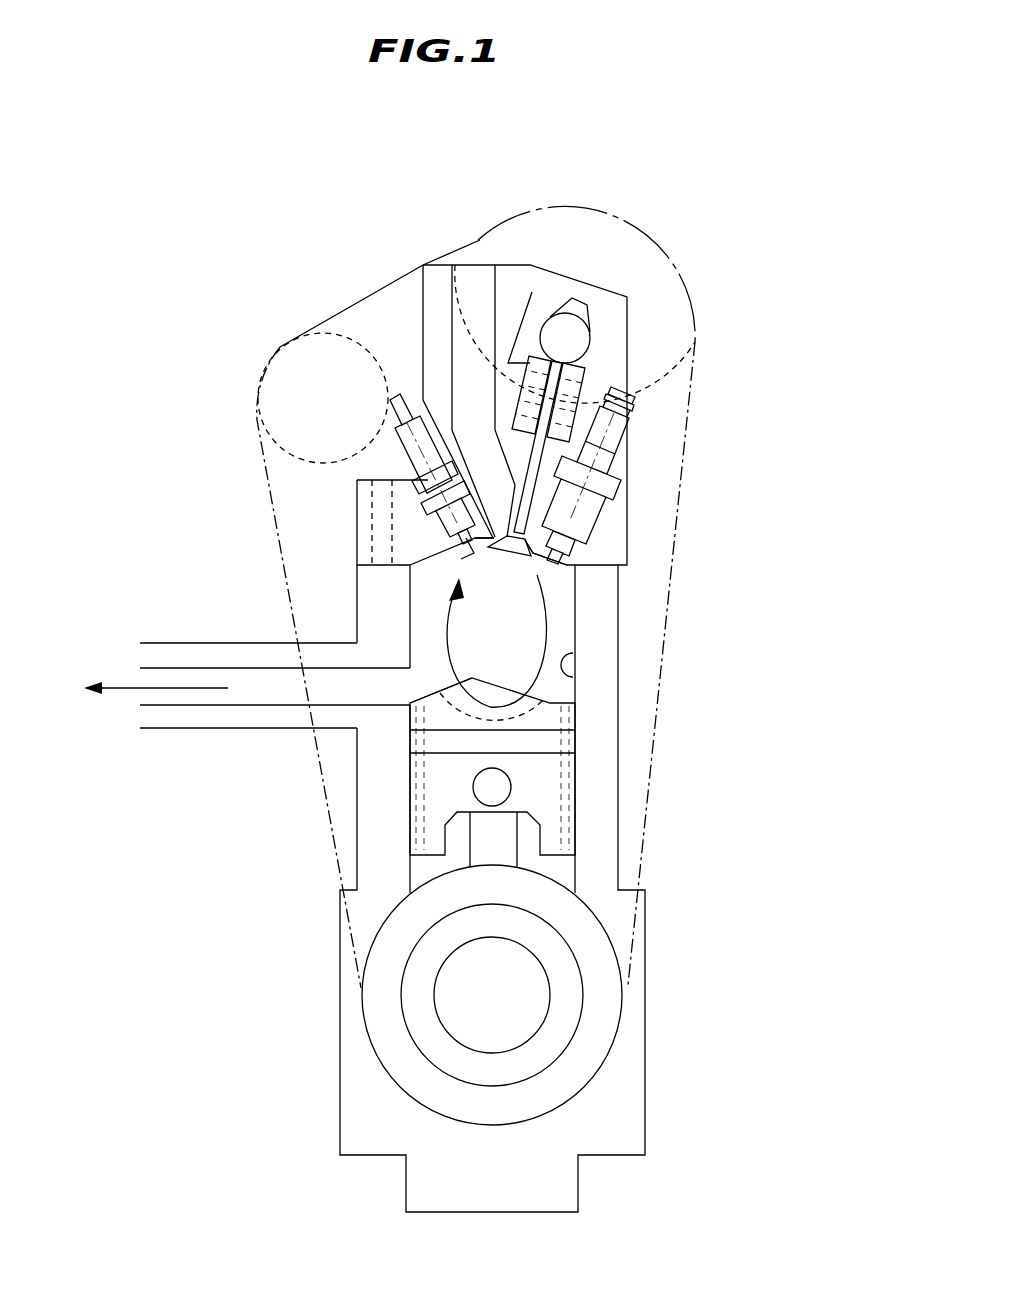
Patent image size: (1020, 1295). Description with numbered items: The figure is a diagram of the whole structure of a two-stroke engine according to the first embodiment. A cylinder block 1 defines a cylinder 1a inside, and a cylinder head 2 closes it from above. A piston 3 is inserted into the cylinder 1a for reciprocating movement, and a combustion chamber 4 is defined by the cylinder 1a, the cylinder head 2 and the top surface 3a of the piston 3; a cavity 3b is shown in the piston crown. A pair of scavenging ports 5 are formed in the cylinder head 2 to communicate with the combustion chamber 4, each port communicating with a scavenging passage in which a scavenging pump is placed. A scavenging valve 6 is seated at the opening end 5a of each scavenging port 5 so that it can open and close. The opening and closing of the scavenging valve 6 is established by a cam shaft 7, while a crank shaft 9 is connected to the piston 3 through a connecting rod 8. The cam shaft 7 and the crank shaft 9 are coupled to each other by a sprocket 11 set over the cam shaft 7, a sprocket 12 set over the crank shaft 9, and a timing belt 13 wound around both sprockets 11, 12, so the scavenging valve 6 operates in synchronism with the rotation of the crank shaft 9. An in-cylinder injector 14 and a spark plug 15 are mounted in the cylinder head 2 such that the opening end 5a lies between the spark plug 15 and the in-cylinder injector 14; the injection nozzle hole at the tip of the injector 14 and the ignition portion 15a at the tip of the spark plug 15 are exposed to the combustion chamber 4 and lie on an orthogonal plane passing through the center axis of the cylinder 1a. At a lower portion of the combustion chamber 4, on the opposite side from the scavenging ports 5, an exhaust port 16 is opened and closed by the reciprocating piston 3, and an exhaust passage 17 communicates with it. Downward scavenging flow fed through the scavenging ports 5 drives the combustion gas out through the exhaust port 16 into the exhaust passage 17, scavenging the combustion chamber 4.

The cylinder block 1 is at (620, 772).
The cylinder 1a is at (573, 677).
The cylinder head 2 is at (613, 288).
The piston 3 is at (565, 818).
The top surface of the piston 3a is at (415, 700).
The piston cavity 3b is at (540, 703).
The combustion chamber 4 is at (425, 588).
The scavenging port 5 is at (471, 282).
The opening end of the scavenging port 5a is at (540, 562).
The scavenging valve 6 is at (540, 598).
The cam shaft 7 is at (590, 335).
The connecting rod 8 is at (485, 840).
The crank shaft 9 is at (582, 1023).
The sprocket 11 is at (613, 215).
The sprocket 12 is at (582, 1092).
The timing belt 13 is at (695, 425).
The in-cylinder injector 14 is at (585, 505).
The spark plug 15 is at (398, 452).
The ignition portion 15a is at (432, 533).
The exhaust port 16 is at (378, 677).
The exhaust passage 17 is at (180, 732).